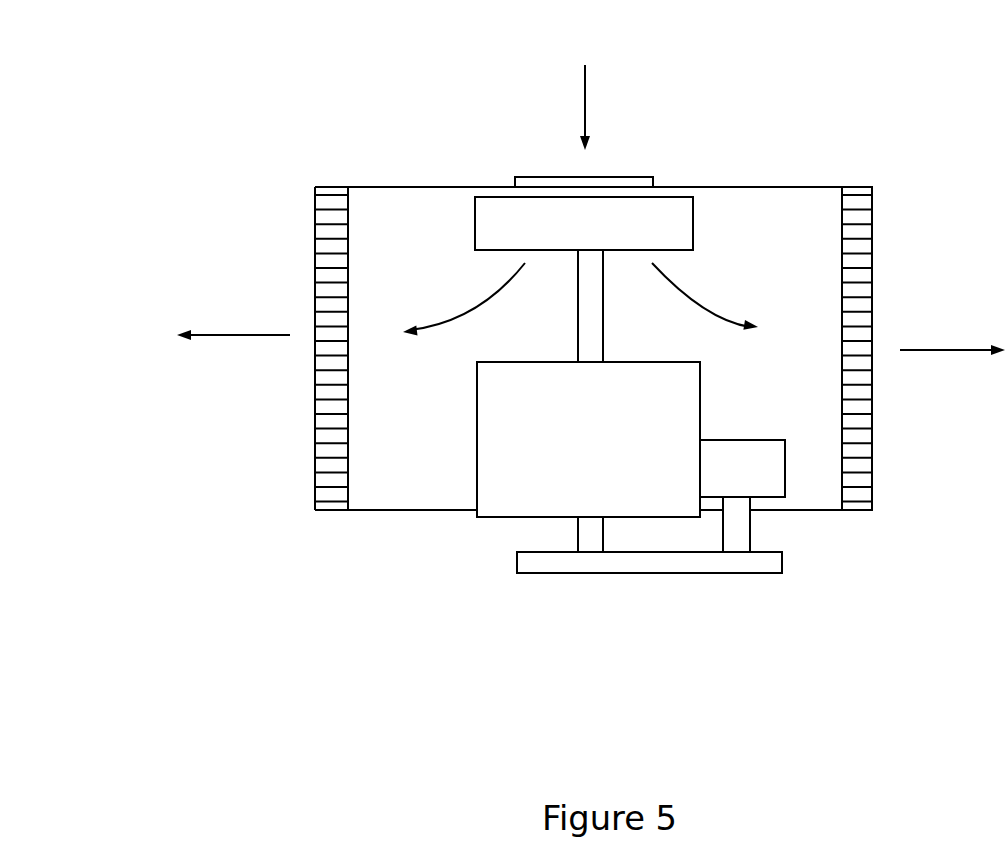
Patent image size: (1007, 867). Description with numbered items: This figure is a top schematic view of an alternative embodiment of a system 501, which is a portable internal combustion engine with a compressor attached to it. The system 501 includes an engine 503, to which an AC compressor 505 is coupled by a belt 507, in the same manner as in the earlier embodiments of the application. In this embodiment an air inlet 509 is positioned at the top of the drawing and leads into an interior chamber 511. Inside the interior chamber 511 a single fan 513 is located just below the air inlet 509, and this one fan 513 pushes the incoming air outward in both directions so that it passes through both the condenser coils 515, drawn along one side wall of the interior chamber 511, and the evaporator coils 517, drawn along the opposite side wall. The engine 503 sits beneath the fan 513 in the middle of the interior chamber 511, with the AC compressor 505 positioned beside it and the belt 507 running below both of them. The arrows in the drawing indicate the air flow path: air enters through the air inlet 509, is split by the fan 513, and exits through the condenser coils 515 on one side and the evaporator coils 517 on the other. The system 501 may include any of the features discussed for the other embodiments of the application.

The system 501 is at (136, 90).
The engine 503 is at (477, 418).
The AC compressor 505 is at (757, 497).
The belt 507 is at (517, 562).
The air inlet 509 is at (640, 177).
The interior chamber 511 is at (388, 208).
The fan 513 is at (693, 215).
The condenser coils 515 is at (315, 480).
The evaporator coils 517 is at (872, 220).